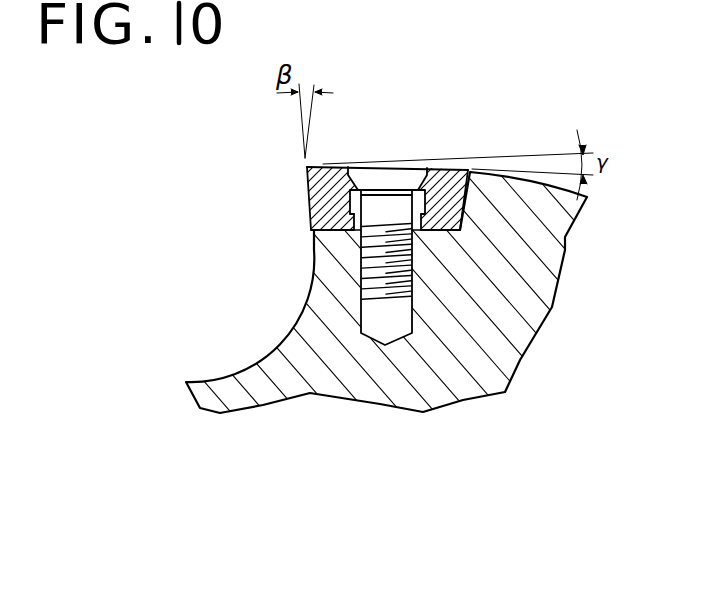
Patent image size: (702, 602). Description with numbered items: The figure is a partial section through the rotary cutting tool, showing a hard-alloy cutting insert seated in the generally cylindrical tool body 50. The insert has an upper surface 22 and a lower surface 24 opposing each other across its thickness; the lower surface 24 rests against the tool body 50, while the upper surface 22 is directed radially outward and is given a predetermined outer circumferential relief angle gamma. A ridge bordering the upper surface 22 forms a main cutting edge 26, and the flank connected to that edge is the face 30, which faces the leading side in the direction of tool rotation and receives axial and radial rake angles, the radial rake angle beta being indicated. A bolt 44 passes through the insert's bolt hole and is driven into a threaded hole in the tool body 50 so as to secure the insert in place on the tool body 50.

The upper surface 22 is at (449, 165).
The lower surface 24 is at (342, 243).
The main cutting edge 26 is at (306, 168).
The face 30 is at (310, 207).
The bolt 44 is at (382, 299).
The tool body 50 is at (270, 392).